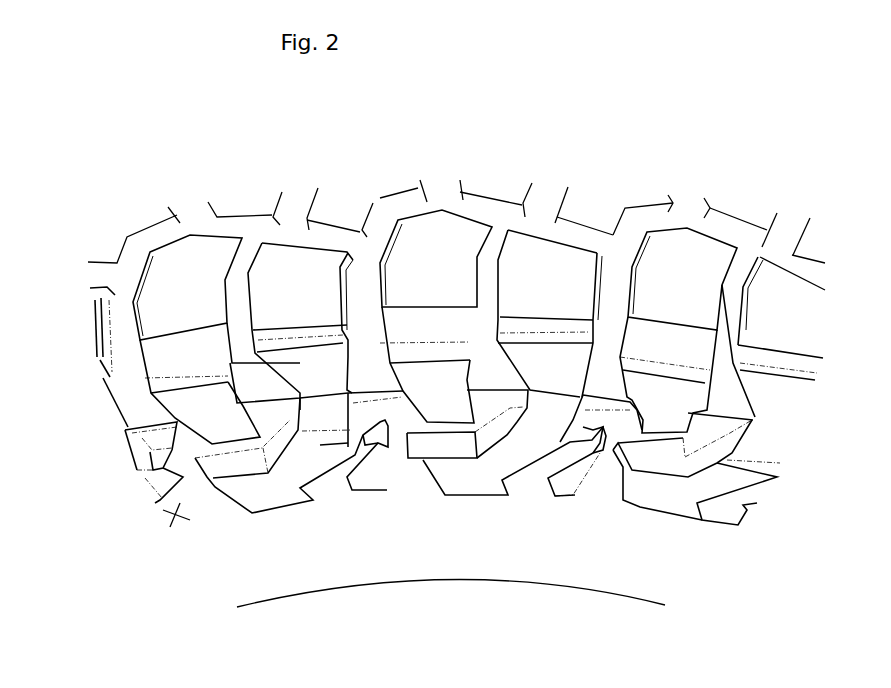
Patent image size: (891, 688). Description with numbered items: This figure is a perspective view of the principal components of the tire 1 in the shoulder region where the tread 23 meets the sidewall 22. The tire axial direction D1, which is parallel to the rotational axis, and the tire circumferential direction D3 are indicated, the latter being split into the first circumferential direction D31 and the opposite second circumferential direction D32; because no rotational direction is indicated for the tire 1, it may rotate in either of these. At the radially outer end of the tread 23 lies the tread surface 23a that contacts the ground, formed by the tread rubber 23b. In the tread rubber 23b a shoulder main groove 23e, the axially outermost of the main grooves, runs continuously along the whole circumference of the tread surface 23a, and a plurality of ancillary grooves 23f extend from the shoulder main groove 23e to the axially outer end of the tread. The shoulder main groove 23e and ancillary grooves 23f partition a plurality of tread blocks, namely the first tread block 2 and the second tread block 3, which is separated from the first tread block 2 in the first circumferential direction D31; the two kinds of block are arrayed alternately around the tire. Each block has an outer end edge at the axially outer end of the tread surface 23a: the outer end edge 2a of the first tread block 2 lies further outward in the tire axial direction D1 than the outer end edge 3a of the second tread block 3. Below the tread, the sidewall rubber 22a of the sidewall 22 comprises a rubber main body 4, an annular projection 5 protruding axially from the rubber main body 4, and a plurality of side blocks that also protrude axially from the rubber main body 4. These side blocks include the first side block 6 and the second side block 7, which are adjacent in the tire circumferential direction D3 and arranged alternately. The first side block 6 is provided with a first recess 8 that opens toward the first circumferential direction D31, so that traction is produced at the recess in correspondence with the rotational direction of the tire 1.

The tire 1 is at (806, 152).
The first tread block 2 is at (305, 242).
The outer end edge of first tread block 2a is at (523, 320).
The second tread block 3 is at (207, 237).
The outer end edge of second tread block 3a is at (410, 317).
The rubber main body 4 is at (183, 503).
The annular projection 5 is at (147, 417).
The first side block 6 is at (305, 357).
The second side block 7 is at (195, 400).
The first recess 8 is at (553, 347).
The sidewall 22 is at (733, 560).
The sidewall rubber 22a is at (205, 545).
The tread 23 is at (165, 190).
The tread surface 23a is at (600, 202).
The tread rubber 23b is at (347, 193).
The shoulder main groove 23e is at (735, 228).
The ancillary groove 23f is at (252, 245).
The tire axial direction D1 is at (838, 177).
The tire circumferential direction D3 is at (490, 148).
The first circumferential direction D31 is at (405, 148).
The second circumferential direction D32 is at (508, 148).